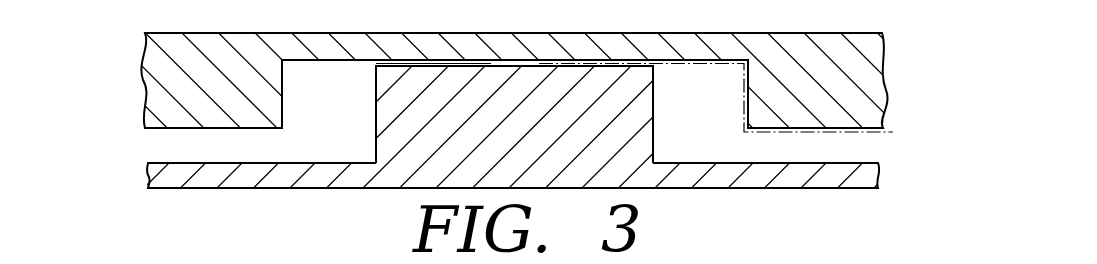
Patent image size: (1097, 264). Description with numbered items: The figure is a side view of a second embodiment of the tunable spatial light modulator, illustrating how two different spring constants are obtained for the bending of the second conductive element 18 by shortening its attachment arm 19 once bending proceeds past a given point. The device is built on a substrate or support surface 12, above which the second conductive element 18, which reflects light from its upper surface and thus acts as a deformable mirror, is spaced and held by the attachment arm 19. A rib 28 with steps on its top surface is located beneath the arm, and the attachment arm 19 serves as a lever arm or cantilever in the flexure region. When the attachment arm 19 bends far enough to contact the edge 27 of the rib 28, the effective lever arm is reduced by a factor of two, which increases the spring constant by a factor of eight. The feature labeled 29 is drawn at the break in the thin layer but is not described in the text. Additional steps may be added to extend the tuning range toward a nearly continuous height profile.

The substrate or support surface 12 is at (878, 170).
The second conductive element 18 is at (830, 33).
The attachment arm 19 is at (687, 35).
The edge 27 is at (655, 81).
The rib 28 is at (656, 133).
The gap in thin layer 29 is at (510, 62).